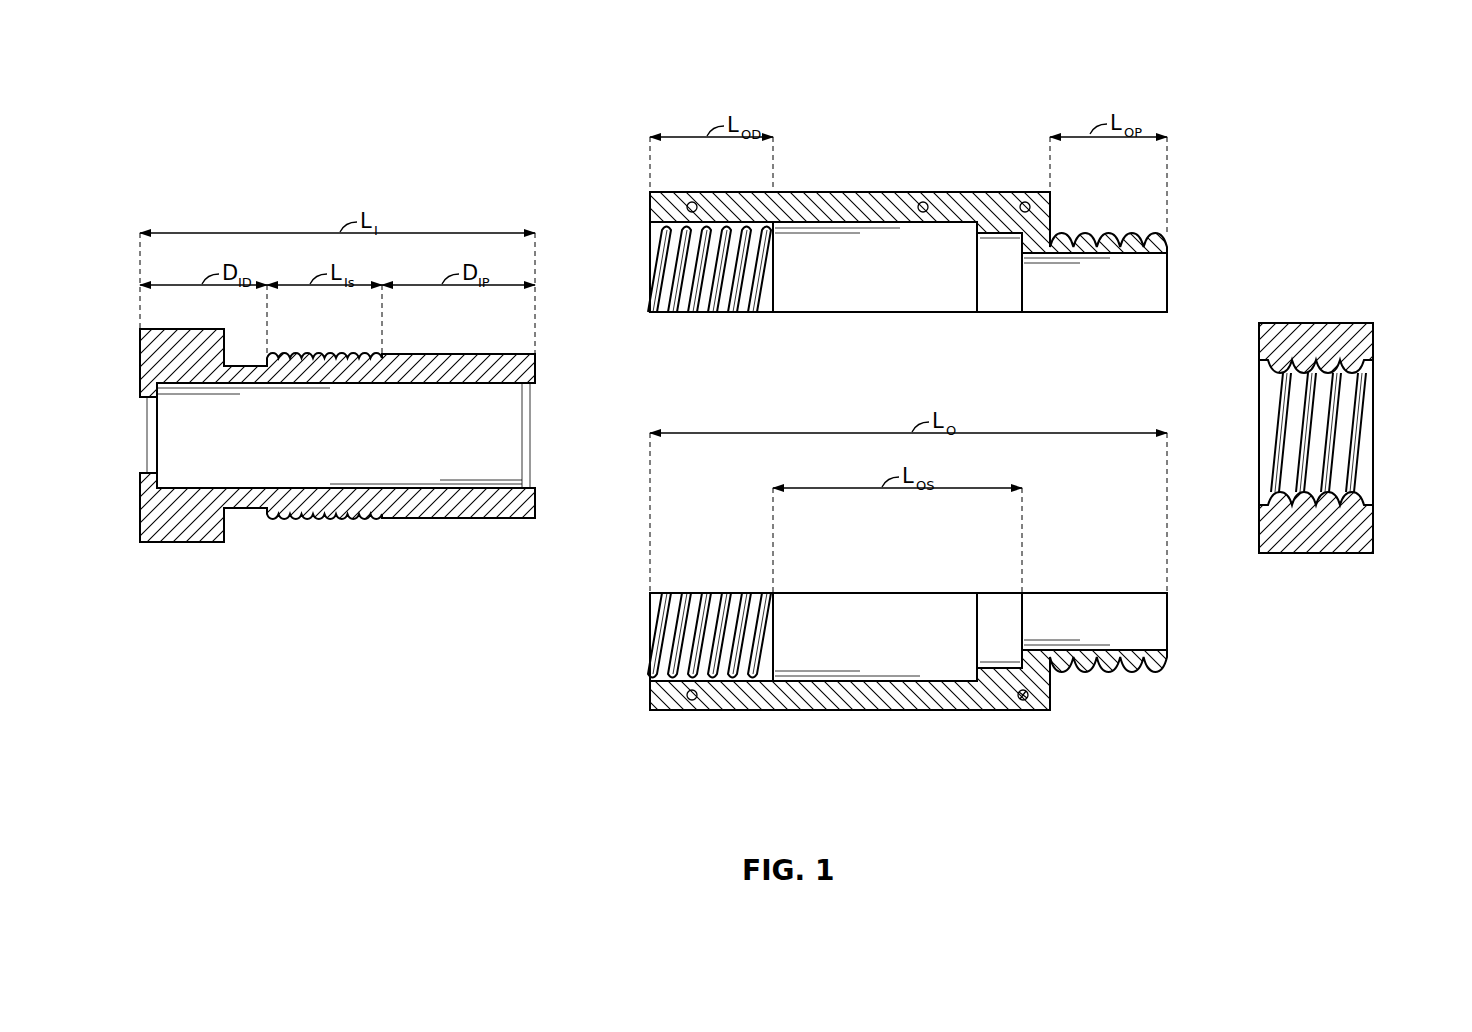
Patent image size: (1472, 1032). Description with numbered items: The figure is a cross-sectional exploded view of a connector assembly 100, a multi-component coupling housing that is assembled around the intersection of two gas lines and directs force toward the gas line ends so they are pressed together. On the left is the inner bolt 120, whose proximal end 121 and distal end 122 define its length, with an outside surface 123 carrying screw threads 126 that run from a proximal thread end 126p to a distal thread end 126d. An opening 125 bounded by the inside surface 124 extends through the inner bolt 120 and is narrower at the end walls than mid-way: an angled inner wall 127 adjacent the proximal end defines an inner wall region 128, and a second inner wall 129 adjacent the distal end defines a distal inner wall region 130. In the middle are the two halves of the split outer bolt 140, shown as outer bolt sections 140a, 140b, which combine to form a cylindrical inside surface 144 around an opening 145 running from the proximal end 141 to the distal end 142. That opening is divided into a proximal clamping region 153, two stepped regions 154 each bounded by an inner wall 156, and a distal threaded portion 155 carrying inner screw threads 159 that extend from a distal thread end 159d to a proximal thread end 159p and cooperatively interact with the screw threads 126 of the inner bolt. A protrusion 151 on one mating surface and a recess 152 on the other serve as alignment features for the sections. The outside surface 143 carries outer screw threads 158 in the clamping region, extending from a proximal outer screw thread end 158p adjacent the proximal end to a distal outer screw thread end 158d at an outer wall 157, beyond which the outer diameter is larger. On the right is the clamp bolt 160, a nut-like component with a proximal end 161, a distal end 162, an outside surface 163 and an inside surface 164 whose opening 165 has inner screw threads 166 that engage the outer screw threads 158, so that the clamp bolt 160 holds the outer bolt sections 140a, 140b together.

The connector assembly 100 is at (437, 118).
The inner bolt 120 is at (318, 592).
The proximal end of the inner bolt 121 is at (540, 378).
The distal end of the inner bolt 122 is at (140, 352).
The outside surface of the inner bolt 123 is at (495, 520).
The inside surface of the inner bolt 124 is at (430, 486).
The opening of the inner bolt 125 is at (258, 441).
The screw threads of the inner bolt 126 is at (350, 522).
The distal thread end 126d is at (267, 522).
The proximal thread end 126p is at (390, 522).
The inner wall of the inner bolt 127 is at (522, 388).
The inner wall region 128 is at (522, 352).
The distal inner wall of the inner bolt 129 is at (162, 487).
The distal inner wall region 130 is at (152, 545).
The split outer bolt 140 is at (898, 133).
The outer bolt section 140a is at (968, 192).
The outer bolt section 140b is at (990, 712).
The proximal end of the split outer bolt 141 is at (1170, 243).
The distal end of the split outer bolt 142 is at (648, 212).
The outside surface of the split outer bolt 143 is at (797, 712).
The inside surface of the split outer bolt 144 is at (945, 222).
The opening of the split outer bolt 145 is at (874, 279).
The protrusion 151 is at (695, 203).
The recess 152 is at (1022, 202).
The clamping region 153 is at (1110, 328).
The stepped region 154 is at (950, 316).
The distal threaded portion 155 is at (730, 316).
The inner wall of the split outer bolt 156 is at (1019, 243).
The outer wall 157 is at (1055, 686).
The outer screw threads of the split outer bolt 158 is at (1112, 232).
The distal outer screw thread end 158d is at (1108, 675).
The proximal outer screw thread end 158p is at (1165, 668).
The inner screw threads of the split outer bolt 159 is at (672, 306).
The distal thread end of the inner screw threads 159d is at (648, 672).
The proximal thread end of the inner screw threads 159p is at (780, 667).
The clamp bolt 160 is at (1300, 240).
The proximal end of the clamp bolt 161 is at (1376, 348).
The distal end of the clamp bolt 162 is at (1255, 345).
The outside surface of the clamp bolt 163 is at (1335, 322).
The inside surface of the clamp bolt 164 is at (1360, 370).
The opening of the clamp bolt 165 is at (1332, 428).
The inner screw threads of the clamp bolt 166 is at (1340, 508).